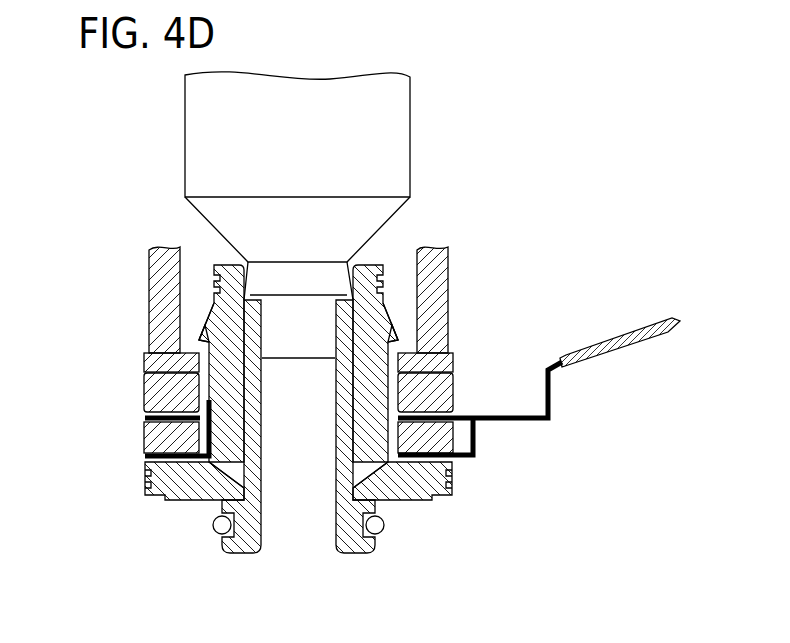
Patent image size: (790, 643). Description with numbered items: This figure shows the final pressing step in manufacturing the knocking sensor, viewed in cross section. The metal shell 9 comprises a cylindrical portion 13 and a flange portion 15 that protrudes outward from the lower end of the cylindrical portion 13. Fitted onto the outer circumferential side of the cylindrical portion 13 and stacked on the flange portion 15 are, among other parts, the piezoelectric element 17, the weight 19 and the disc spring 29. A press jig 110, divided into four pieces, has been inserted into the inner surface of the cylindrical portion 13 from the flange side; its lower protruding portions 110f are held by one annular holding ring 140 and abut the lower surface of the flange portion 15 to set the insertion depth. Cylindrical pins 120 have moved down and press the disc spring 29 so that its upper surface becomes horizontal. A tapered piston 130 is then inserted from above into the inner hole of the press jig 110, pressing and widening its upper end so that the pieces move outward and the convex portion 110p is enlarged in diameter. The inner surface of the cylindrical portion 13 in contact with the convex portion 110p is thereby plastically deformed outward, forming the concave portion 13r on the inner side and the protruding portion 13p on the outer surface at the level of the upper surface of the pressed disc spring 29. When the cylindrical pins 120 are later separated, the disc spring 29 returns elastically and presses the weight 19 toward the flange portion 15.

The piston 130 is at (390, 172).
The cylindrical pins 120 is at (442, 272).
The cylindrical portion 13 is at (375, 264).
The convex portion 110p is at (207, 302).
The protruding portion 13p is at (205, 326).
The press jig 110 is at (420, 340).
The concave portion 13r is at (258, 343).
The disc spring 29 is at (455, 368).
The weight 19 is at (455, 393).
The piezoelectric element 17 is at (458, 437).
The metal shell 9 is at (412, 488).
The flange portion 15 is at (452, 482).
The protruding portions 110f is at (222, 540).
The holding ring 140 is at (377, 533).